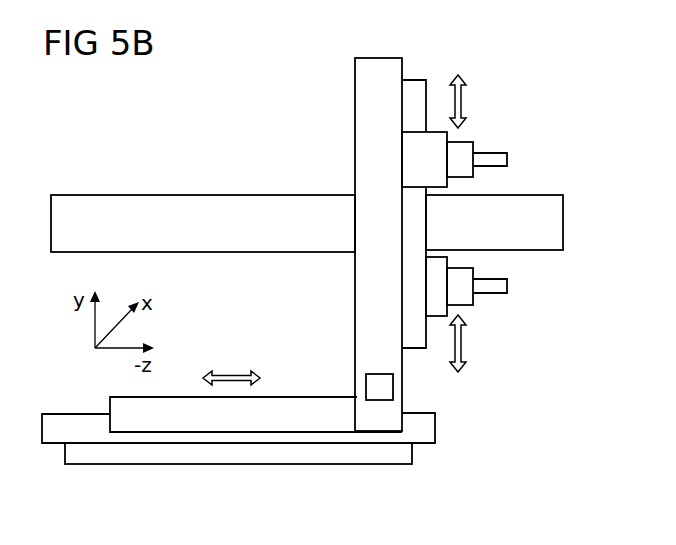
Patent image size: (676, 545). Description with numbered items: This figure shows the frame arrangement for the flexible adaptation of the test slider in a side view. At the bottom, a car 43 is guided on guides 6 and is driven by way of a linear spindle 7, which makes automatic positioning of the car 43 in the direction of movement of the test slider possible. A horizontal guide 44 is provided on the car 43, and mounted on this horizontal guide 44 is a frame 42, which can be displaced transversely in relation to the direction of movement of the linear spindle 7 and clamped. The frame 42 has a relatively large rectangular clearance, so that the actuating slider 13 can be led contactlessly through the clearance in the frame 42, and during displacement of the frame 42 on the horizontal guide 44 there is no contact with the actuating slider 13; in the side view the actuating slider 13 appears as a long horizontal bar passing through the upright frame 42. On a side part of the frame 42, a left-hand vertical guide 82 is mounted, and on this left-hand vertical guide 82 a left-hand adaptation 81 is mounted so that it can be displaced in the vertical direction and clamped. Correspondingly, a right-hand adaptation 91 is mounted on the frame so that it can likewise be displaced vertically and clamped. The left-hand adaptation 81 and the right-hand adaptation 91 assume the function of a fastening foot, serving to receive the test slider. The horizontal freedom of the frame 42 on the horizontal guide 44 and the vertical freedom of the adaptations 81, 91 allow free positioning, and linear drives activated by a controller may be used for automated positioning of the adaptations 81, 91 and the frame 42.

The actuating slider 13 is at (158, 207).
The frame 42 is at (367, 87).
The left-hand vertical guide 82 is at (415, 90).
The left-hand adaptation 81 is at (513, 160).
The right-hand adaptation 91 is at (513, 288).
The car 43 is at (301, 407).
The horizontal guide 44 is at (383, 385).
The guides 6 is at (425, 428).
The linear spindle 7 is at (303, 453).